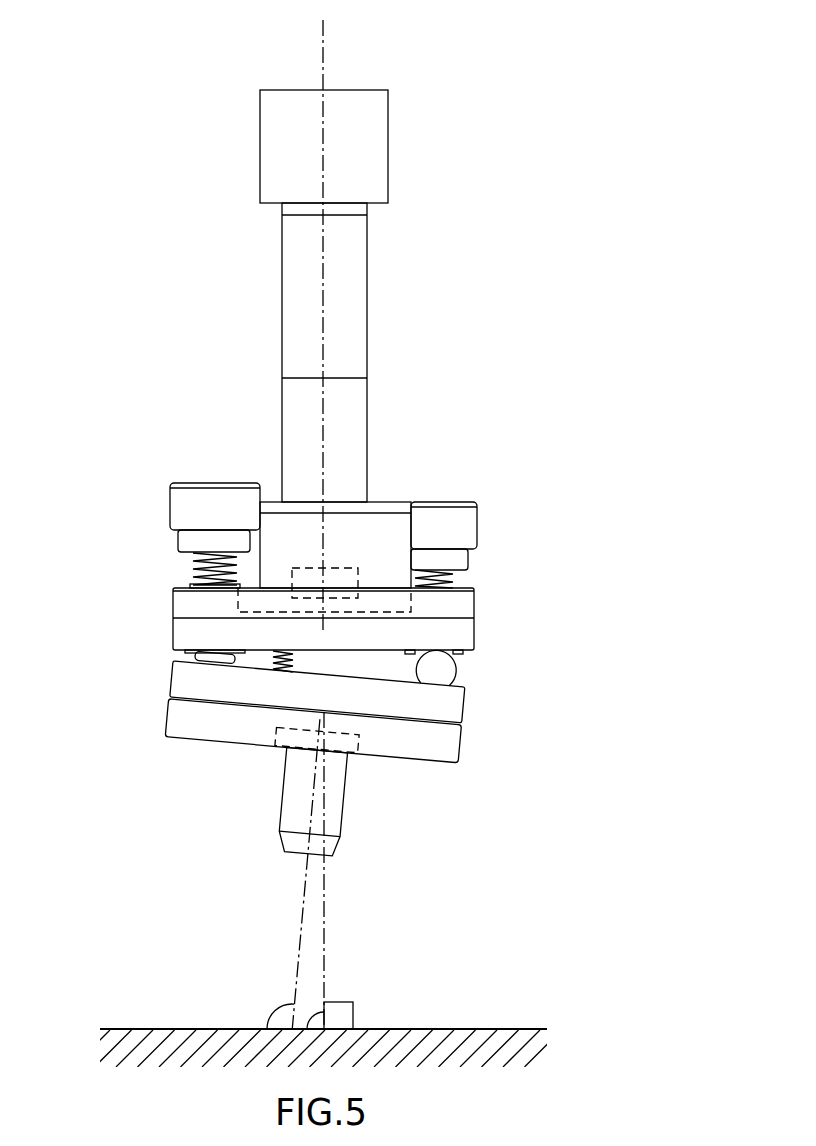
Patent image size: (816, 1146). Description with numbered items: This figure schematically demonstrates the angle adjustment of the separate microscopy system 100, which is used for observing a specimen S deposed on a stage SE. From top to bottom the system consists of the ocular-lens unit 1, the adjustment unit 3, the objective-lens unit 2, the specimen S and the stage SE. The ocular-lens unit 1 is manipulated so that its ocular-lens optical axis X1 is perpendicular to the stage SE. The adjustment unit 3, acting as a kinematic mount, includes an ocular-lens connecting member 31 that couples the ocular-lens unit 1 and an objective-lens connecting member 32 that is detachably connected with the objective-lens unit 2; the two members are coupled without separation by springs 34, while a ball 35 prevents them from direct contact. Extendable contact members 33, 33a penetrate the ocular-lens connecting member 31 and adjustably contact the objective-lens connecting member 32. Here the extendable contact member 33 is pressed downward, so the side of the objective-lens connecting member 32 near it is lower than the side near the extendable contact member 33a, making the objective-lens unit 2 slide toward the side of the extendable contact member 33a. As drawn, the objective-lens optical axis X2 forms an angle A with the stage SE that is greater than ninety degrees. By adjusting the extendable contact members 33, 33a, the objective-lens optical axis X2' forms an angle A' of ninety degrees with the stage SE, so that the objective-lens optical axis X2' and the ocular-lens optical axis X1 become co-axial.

The separate microscopy system 100 is at (534, 95).
The ocular-lens unit 1 is at (375, 143).
The ocular-lens optical axis X1 is at (326, 32).
The adjustment unit 3 is at (556, 566).
The extendable contact member 33a is at (178, 506).
The extendable contact member 33 is at (470, 524).
The ocular-lens connecting member 31 is at (468, 606).
The spring 34 is at (276, 670).
The ball 35 is at (447, 663).
The objective-lens connecting member 32 is at (455, 742).
The objective-lens unit 2 is at (340, 802).
The objective-lens optical axis X2 is at (269, 871).
The objective-lens optical axis X2' is at (363, 870).
The angle A is at (270, 992).
The angle A' is at (341, 980).
The specimen S is at (350, 1017).
The stage SE is at (496, 1029).